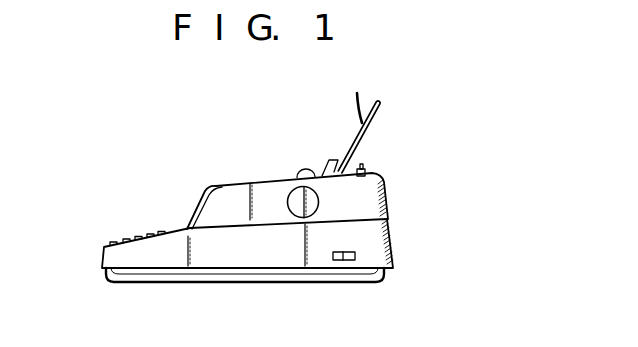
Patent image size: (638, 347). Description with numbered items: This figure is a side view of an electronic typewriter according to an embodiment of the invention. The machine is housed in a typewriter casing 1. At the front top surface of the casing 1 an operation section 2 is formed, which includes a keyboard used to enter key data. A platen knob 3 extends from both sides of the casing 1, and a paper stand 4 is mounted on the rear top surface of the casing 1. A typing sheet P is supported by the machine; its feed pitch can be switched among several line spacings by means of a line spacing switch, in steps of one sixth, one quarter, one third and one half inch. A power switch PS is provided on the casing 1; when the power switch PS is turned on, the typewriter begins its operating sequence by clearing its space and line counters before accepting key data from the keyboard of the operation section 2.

The typewriter casing 1 is at (392, 245).
The operation section 2 is at (143, 230).
The platen knob 3 is at (319, 202).
The paper stand 4 is at (362, 137).
The typing sheet P is at (359, 93).
The power switch PS is at (352, 260).